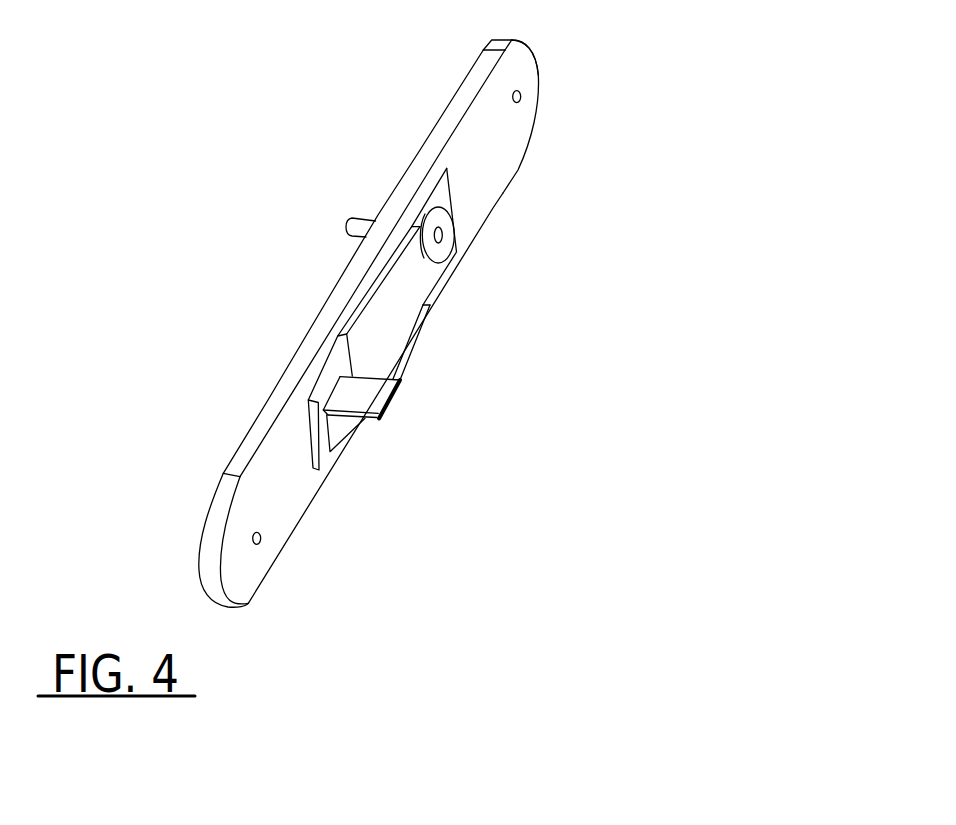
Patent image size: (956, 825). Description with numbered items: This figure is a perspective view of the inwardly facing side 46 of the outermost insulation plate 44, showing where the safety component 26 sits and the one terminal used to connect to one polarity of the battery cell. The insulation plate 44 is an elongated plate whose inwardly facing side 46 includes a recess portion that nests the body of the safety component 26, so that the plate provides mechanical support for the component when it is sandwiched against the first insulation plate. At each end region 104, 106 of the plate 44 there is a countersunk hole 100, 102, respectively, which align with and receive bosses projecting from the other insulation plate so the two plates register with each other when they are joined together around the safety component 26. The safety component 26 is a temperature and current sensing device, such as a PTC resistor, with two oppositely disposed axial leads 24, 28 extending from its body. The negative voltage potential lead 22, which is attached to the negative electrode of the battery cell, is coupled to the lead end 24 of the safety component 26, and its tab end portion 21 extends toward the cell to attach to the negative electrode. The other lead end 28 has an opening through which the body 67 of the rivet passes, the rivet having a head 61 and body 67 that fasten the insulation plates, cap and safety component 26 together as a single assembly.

The insulation plate 44 is at (200, 568).
The inwardly facing side 46 is at (283, 507).
The countersunk hole 100 is at (521, 97).
The countersunk hole 102 is at (261, 538).
The end region 104 is at (533, 57).
The end region 106 is at (247, 613).
The rivet body 67 is at (345, 222).
The lead end of safety component 24 is at (380, 345).
The safety component 26 is at (422, 322).
The negative voltage potential lead 22 is at (380, 420).
The tab end portion 21 is at (403, 388).
The rivet head 61 is at (441, 250).
The lead end of safety component 28 is at (450, 195).